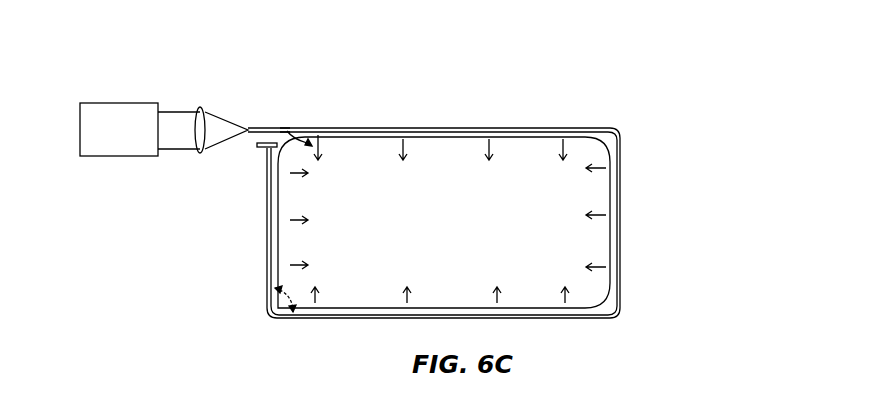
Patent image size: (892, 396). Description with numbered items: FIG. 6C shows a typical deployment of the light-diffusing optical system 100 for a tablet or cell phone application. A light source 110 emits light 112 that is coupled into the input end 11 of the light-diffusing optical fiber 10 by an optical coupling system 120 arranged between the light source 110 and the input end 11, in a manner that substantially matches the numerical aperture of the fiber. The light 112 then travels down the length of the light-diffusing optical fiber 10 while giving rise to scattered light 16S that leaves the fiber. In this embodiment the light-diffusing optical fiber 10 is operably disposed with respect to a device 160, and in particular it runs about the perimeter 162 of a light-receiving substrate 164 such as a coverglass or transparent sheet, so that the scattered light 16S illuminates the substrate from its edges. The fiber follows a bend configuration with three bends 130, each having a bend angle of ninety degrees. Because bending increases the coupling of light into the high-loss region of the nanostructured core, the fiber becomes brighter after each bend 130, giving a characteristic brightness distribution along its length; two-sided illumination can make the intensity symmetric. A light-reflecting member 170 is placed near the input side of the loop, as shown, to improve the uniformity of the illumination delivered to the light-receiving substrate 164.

The light-diffusing optical system 100 is at (150, 62).
The light source 110 is at (119, 129).
The light beam 112 is at (176, 151).
The optical coupling system 120 is at (199, 107).
The input end 11 is at (243, 126).
The light-diffusing optical fiber 10 is at (340, 128).
The light-receiving substrate 164 is at (444, 221).
The light-reflecting member 170 is at (256, 148).
The scattered light 16S is at (288, 132).
The perimeter 162 is at (443, 128).
The device 160 is at (518, 137).
The bend 130 is at (612, 128).